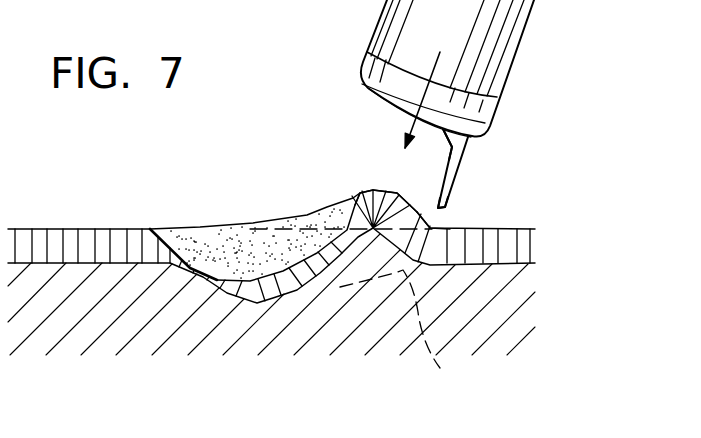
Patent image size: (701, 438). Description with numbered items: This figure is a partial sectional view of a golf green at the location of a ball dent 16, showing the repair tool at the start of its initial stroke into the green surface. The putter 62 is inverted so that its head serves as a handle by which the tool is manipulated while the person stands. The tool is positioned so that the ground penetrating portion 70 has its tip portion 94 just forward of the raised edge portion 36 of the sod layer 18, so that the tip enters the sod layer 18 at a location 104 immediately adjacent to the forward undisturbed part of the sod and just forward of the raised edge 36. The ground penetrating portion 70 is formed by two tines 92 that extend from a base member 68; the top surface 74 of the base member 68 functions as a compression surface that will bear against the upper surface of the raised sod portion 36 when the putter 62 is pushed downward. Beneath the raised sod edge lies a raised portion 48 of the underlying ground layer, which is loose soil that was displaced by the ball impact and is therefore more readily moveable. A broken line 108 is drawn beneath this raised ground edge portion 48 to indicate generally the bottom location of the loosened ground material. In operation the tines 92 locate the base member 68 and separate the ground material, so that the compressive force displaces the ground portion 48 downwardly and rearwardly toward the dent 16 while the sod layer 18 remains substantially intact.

The putter 62 is at (519, 40).
The base member 68 is at (484, 108).
The top surface 74 is at (379, 103).
The ground penetrating portion 70 is at (462, 152).
The tines 92 is at (452, 165).
The tip portion 94 is at (445, 207).
The sod layer 18 is at (510, 248).
The raised edge portion 36 is at (375, 191).
The location 104 is at (435, 228).
The dent 16 is at (252, 280).
The raised portion of the ground layer 48 is at (380, 243).
The broken line 108 is at (413, 327).